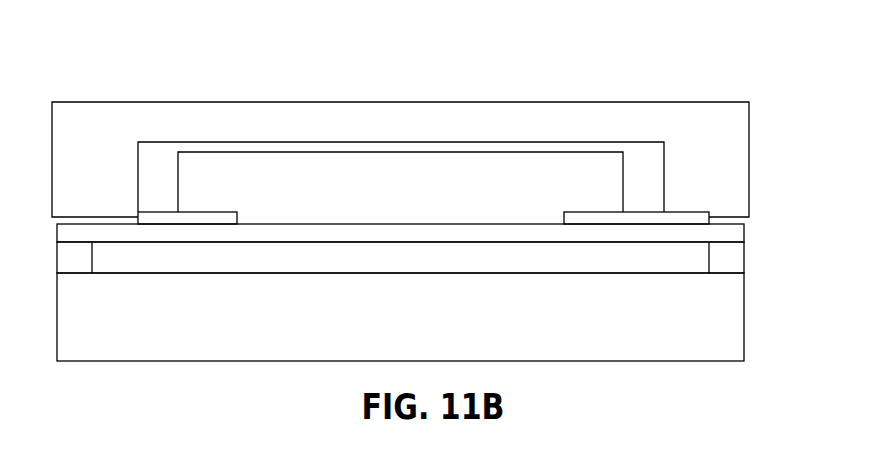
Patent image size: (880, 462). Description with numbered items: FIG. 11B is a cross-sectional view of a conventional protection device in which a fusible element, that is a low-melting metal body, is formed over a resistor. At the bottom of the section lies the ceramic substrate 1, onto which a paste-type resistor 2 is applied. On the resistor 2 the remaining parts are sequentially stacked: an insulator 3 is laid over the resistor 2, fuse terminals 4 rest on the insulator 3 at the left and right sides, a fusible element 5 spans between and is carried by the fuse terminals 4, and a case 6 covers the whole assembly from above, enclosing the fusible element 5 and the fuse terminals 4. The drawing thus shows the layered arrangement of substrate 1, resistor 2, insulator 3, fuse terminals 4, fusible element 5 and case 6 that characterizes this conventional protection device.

The ceramic substrate 1 is at (725, 325).
The paste-type resistor 2 is at (690, 260).
The insulator 3 is at (745, 237).
The fuse terminals 4 is at (710, 217).
The fusible element 5 is at (425, 180).
The case 6 is at (537, 118).